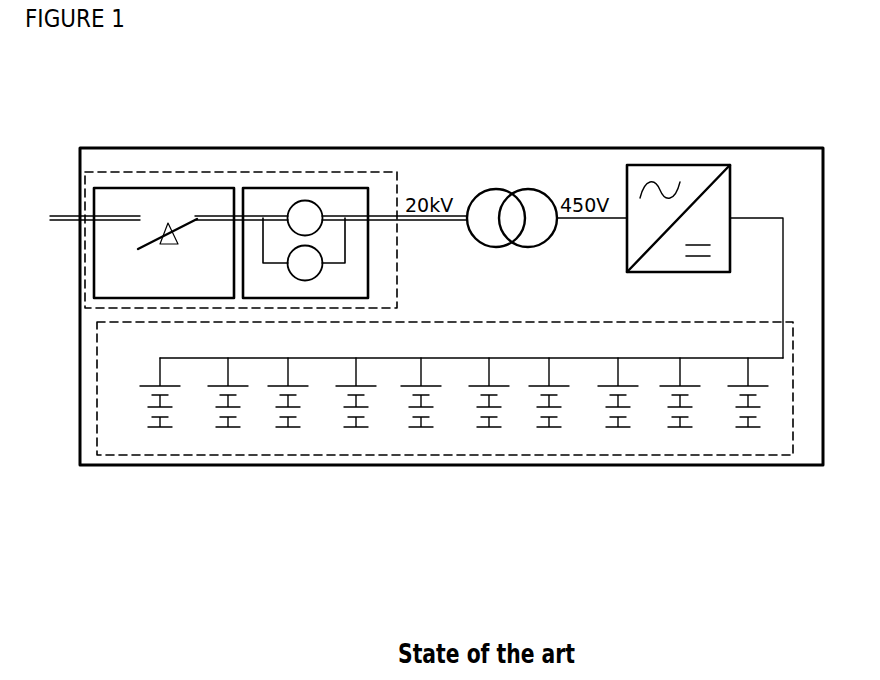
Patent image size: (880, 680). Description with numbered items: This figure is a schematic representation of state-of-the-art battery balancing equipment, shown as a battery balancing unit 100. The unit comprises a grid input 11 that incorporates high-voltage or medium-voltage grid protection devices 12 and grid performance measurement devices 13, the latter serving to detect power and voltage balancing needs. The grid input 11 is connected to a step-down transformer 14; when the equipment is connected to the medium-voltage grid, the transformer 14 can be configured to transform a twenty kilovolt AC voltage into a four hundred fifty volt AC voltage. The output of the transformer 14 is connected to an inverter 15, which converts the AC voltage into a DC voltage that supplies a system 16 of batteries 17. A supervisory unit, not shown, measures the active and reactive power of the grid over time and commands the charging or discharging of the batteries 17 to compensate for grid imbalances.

The battery balancing unit 100 is at (297, 148).
The grid input 11 is at (117, 172).
The grid protection devices 12 is at (163, 188).
The grid performance measurement devices 13 is at (346, 188).
The step-down transformer 14 is at (492, 190).
The inverter 15 is at (698, 165).
The system of batteries 16 is at (523, 455).
The battery 17 is at (160, 427).